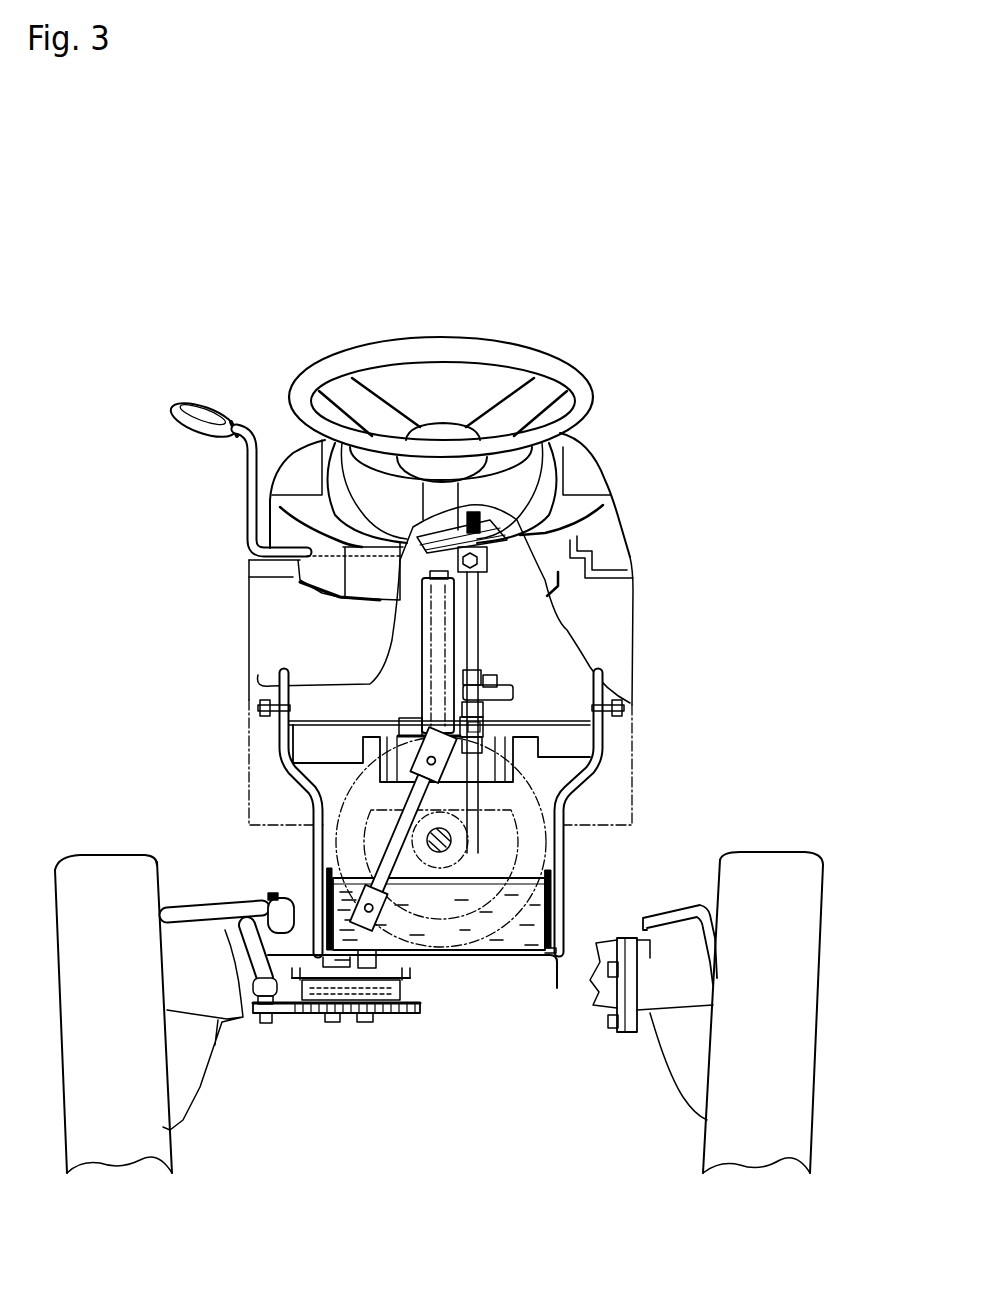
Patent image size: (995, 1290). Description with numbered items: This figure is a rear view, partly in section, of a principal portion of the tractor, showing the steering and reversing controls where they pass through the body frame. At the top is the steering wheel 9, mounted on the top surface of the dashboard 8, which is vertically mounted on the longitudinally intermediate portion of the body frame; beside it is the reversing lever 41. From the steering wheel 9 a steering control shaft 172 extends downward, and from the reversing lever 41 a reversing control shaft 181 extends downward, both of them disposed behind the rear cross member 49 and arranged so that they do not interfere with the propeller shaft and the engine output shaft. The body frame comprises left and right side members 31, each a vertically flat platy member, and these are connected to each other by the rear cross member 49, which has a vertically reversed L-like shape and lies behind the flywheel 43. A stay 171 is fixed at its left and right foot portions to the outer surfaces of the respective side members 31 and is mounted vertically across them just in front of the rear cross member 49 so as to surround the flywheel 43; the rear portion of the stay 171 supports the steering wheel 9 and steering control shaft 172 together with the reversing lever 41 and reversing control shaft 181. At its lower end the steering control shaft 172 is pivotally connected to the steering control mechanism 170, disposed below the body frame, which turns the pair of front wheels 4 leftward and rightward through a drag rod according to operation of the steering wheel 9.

The steering wheel 9 is at (560, 375).
The reversing lever 41 is at (203, 428).
The dashboard 8 is at (608, 640).
The reversing control shaft 181 is at (505, 765).
The flywheel 43 is at (585, 792).
The stay 171 is at (295, 782).
The side members 31 is at (323, 882).
The rear cross member 49 is at (503, 933).
The steering control shaft 172 is at (387, 893).
The steering control mechanism 170 is at (332, 1036).
The front wheels 4 is at (102, 883).